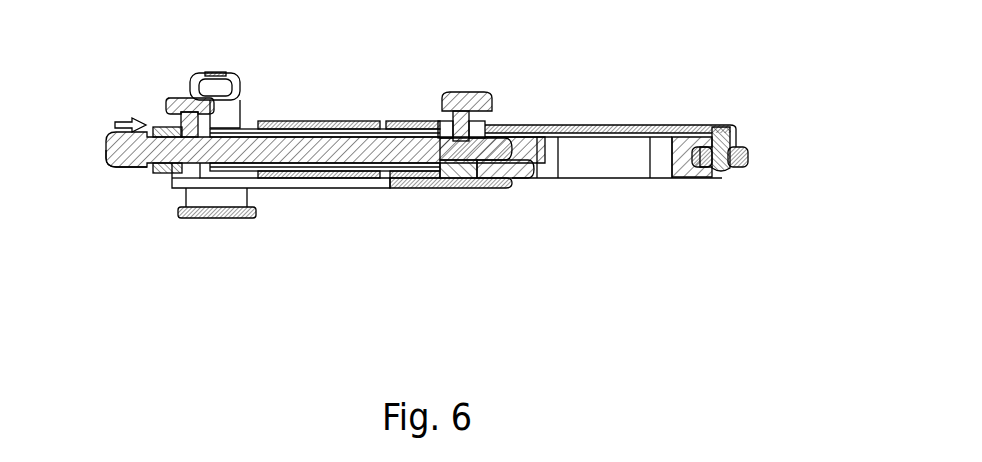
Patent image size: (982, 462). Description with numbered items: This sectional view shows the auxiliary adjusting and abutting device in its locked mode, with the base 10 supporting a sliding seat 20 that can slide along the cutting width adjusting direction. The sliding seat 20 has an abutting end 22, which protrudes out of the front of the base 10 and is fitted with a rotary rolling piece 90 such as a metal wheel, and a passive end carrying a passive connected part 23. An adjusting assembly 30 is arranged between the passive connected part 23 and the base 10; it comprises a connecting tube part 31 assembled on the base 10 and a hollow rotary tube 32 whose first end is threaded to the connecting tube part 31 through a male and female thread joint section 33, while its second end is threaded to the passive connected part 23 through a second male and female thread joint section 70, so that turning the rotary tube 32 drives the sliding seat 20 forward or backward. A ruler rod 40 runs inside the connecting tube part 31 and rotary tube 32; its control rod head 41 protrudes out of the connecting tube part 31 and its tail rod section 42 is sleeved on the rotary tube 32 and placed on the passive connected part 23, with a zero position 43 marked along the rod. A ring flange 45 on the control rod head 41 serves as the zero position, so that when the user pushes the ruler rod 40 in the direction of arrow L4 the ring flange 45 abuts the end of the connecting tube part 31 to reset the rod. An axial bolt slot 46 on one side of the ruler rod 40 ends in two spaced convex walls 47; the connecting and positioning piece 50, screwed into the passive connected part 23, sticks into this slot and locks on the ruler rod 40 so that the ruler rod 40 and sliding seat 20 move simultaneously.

The arrow L4 is at (144, 121).
The base 10 is at (433, 193).
The sliding seat 20 is at (623, 122).
The abutting end 22 is at (739, 132).
The passive connected part 23 is at (466, 176).
The adjusting assembly 30 is at (226, 310).
The connecting tube part 31 is at (222, 166).
The rotary tube 32 is at (290, 179).
The male and female thread joint section 33 is at (273, 120).
The ruler rod 40 is at (322, 147).
The control rod head 41 is at (127, 168).
The tail rod section 42 is at (515, 152).
The zero position 43 is at (162, 170).
The ring flange 45 is at (147, 168).
The axial bolt slot 46 is at (415, 140).
The convex walls 47 is at (500, 127).
The connecting and positioning piece 50 is at (466, 92).
The second male and female thread joint section 70 is at (372, 136).
The rotary rolling piece 90 is at (748, 171).